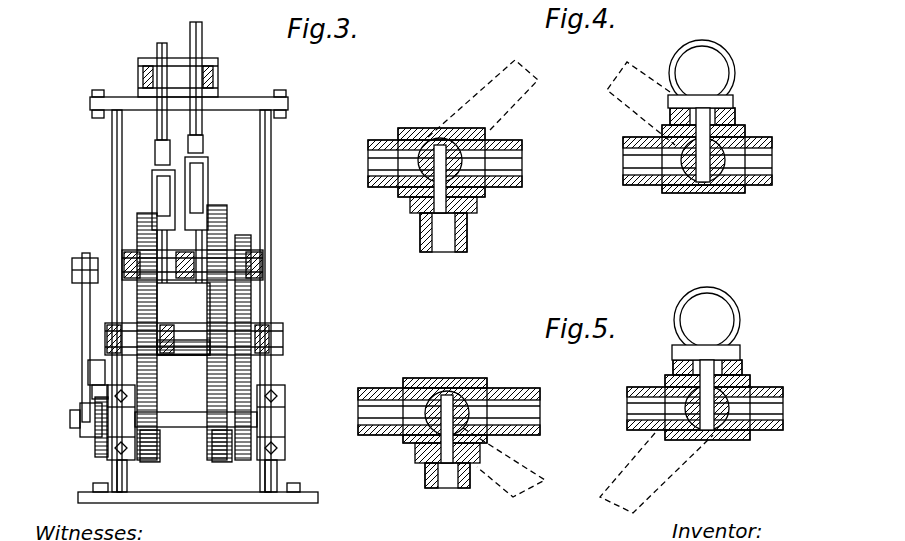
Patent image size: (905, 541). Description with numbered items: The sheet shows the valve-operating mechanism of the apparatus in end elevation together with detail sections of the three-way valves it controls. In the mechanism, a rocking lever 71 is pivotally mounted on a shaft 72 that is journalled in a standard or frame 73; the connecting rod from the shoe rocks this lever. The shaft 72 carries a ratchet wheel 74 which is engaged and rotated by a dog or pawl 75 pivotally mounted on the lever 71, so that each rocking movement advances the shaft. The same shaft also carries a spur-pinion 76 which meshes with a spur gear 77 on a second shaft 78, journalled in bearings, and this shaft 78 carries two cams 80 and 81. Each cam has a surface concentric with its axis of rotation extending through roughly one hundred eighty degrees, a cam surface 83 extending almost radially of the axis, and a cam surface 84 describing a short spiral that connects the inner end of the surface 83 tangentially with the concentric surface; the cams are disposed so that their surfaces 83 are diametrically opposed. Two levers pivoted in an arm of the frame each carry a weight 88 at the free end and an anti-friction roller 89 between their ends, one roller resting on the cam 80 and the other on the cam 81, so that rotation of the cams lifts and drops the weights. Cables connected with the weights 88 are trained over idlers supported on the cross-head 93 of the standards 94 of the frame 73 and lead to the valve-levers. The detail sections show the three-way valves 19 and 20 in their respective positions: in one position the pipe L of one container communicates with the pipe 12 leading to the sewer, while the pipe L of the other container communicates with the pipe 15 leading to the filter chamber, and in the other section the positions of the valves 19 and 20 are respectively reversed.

In FIG. 4, the pipe 12 is at (468, 238).
In FIG. 5, the pipe 12 is at (451, 489).
In FIG. 4, the pipe 15 is at (640, 187).
In FIG. 5, the pipe 15 is at (640, 432).
In FIG. 4, the three-way valve 19 is at (437, 137).
In FIG. 5, the three-way valve 19 is at (441, 405).
In FIG. 4, the three-way valve 20 is at (722, 110).
In FIG. 5, the three-way valve 20 is at (714, 436).
In FIG. 4, the pipe L is at (378, 190).
In FIG. 5, the pipe L is at (386, 437).
In FIG. 3, the rocking lever 71 is at (82, 328).
In FIG. 3, the shaft 72 is at (193, 427).
In FIG. 3, the standard or frame 73 is at (217, 497).
In FIG. 3, the ratchet wheel 74 is at (97, 448).
In FIG. 3, the dog or pawl 75 is at (100, 385).
In FIG. 3, the spur-pinion 76 is at (236, 452).
In FIG. 3, the spur gear 77 is at (247, 310).
In FIG. 3, the shaft 78 is at (183, 319).
In FIG. 3, the cam 80 is at (150, 412).
In FIG. 3, the cam 81 is at (263, 345).
In FIG. 3, the cam surface 83 is at (145, 297).
In FIG. 3, the cam surface 84 is at (105, 365).
In FIG. 3, the weight 88 is at (177, 205).
In FIG. 3, the anti-friction roller 89 is at (147, 215).
In FIG. 3, the cross-head 93 is at (240, 97).
In FIG. 3, the standards 94 is at (273, 180).